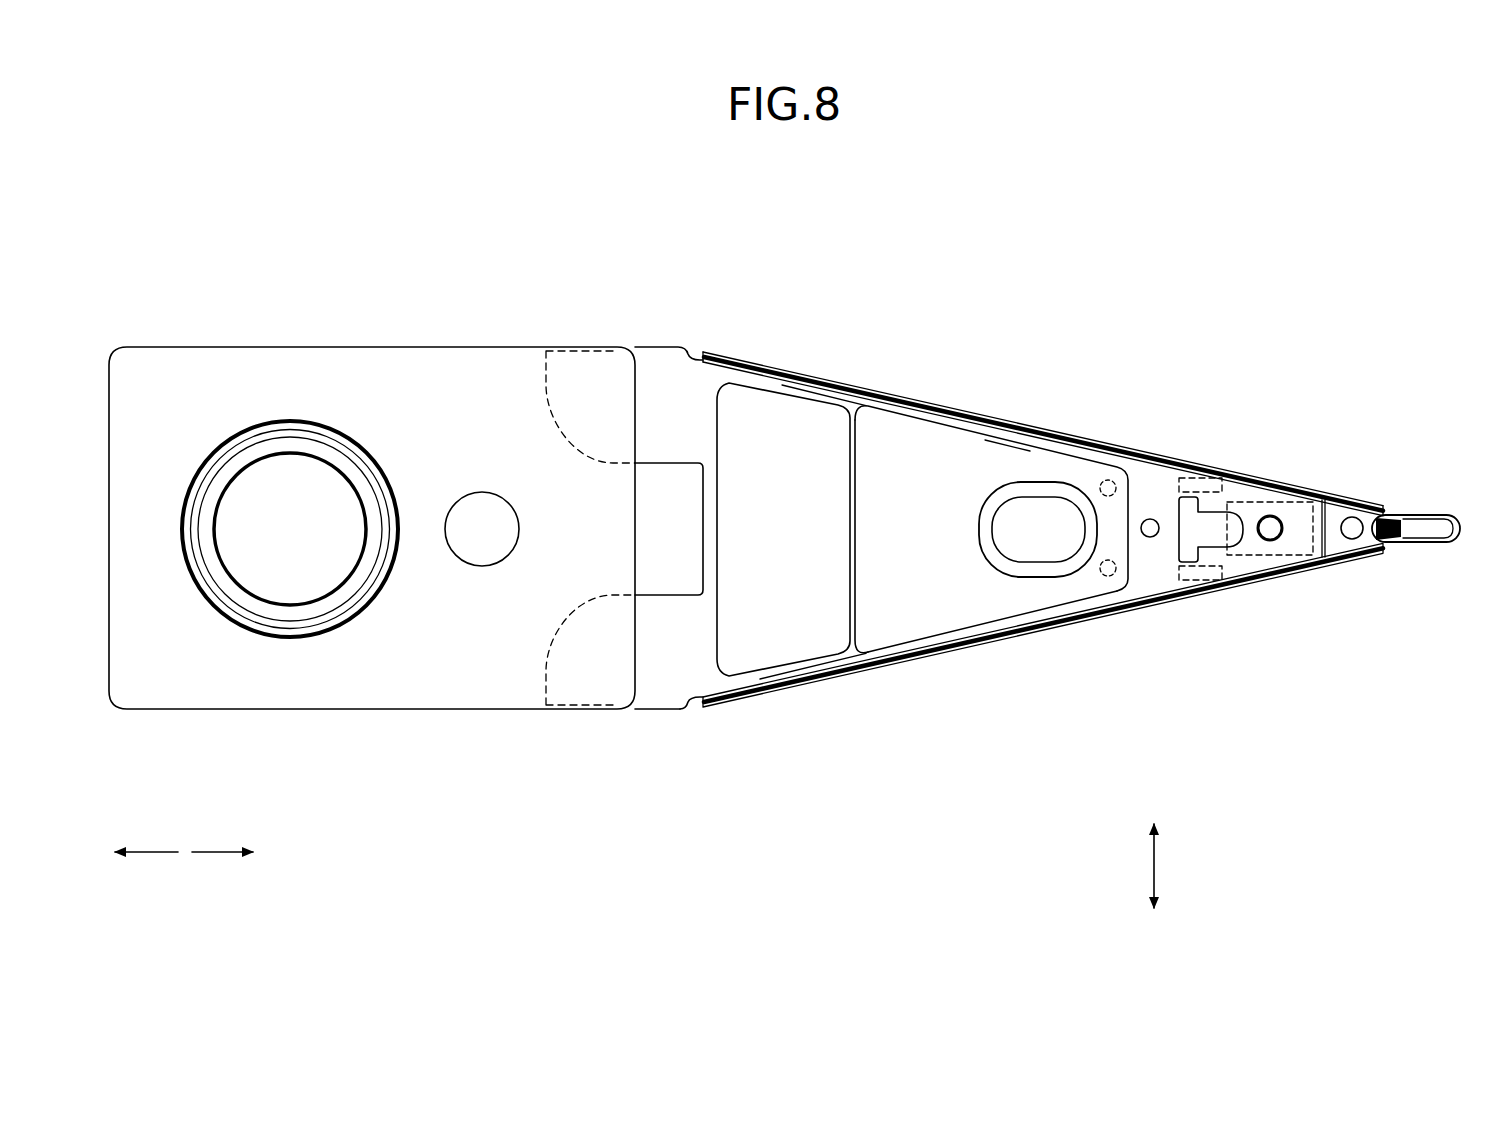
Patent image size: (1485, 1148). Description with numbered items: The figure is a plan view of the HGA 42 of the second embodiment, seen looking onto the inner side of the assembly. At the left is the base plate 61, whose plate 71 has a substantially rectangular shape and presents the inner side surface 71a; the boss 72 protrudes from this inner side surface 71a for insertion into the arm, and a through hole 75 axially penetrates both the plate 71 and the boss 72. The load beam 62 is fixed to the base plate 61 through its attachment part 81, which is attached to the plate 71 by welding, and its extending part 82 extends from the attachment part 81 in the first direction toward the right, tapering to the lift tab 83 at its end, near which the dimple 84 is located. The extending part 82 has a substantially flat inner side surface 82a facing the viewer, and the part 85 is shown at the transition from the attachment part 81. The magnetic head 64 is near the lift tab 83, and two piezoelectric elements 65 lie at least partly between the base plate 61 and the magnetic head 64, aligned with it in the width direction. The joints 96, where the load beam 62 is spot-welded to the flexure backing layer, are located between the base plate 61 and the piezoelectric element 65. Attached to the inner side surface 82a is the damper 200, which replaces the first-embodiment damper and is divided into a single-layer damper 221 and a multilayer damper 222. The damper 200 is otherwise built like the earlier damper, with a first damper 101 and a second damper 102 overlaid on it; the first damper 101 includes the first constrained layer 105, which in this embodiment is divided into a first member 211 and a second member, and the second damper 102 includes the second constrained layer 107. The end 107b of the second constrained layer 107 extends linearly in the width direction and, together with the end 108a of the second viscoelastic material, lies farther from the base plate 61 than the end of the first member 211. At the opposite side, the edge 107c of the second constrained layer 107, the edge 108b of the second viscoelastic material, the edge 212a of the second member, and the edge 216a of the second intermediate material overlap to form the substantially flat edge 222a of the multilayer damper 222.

The HGA 42 is at (150, 205).
The base plate 61 is at (407, 347).
The load beam 62 is at (873, 392).
The magnetic head 64 is at (1251, 501).
The piezoelectric element 65 is at (1196, 477).
The plate 71 is at (587, 493).
The inner side surface 71a is at (471, 385).
The boss 72 is at (318, 452).
The through hole 75 is at (263, 474).
The attachment part 81 is at (651, 690).
The extending part 82 is at (781, 692).
The inner side surface 82a is at (1151, 518).
The lift tab 83 is at (1401, 515).
The dimple 84 is at (1270, 542).
The step portion 85 is at (684, 706).
The joints 96 is at (1104, 478).
The first damper 101 is at (830, 392).
The second damper 102 is at (1030, 441).
The first constrained layer 105 is at (786, 467).
The second constrained layer 107 is at (950, 458).
The end of the second constrained layer 107b is at (890, 600).
The edge of the second constrained layer 107c is at (1014, 667).
The end of the second viscoelastic material 108a is at (850, 620).
The edge of the second viscoelastic material 108b is at (1014, 667).
The damper 200 is at (1043, 399).
The first member 211 is at (787, 412).
The edge of the second member 212a is at (1014, 667).
The edge of the second intermediate material 216a is at (938, 628).
The single-layer damper 221 is at (758, 680).
The multilayer damper 222 is at (910, 410).
The edge of the multilayer damper 222a is at (997, 438).